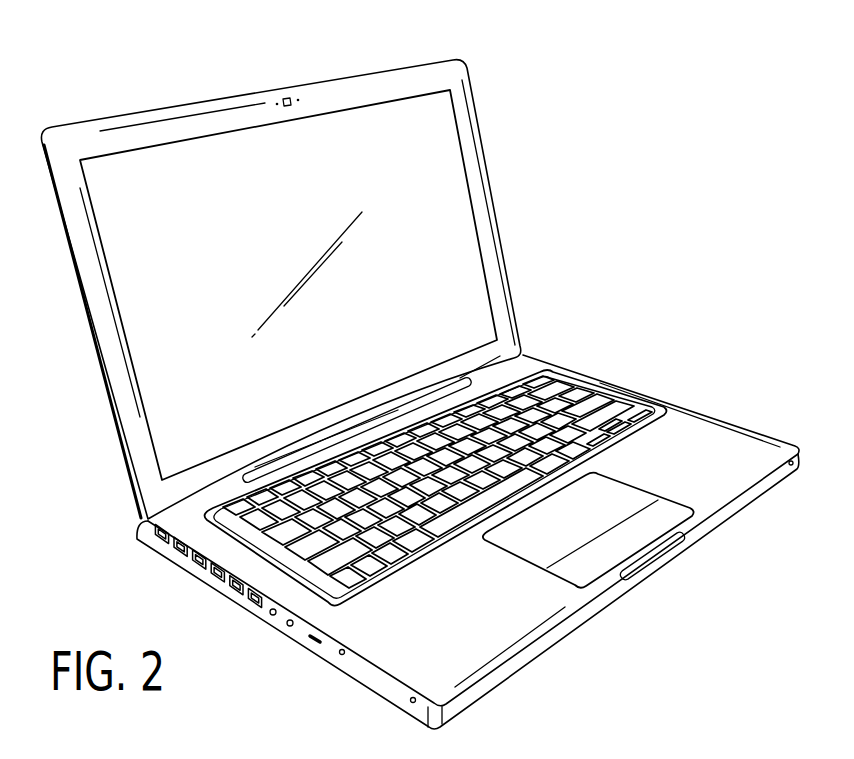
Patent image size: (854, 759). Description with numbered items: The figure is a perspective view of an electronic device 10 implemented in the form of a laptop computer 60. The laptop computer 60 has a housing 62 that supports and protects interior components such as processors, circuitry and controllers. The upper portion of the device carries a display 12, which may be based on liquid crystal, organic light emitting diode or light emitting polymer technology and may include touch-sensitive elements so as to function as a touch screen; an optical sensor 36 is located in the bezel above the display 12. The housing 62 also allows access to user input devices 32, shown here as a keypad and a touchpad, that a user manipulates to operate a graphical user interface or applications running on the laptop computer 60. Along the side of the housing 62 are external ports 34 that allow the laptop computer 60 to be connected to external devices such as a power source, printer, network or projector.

The electronic device 10 is at (198, 74).
The display 12 is at (453, 142).
The user input devices 32 is at (584, 398).
The external ports 34 is at (293, 633).
The optical sensors 36 is at (286, 97).
The laptop computer 60 is at (466, 62).
The housing 62 is at (665, 400).